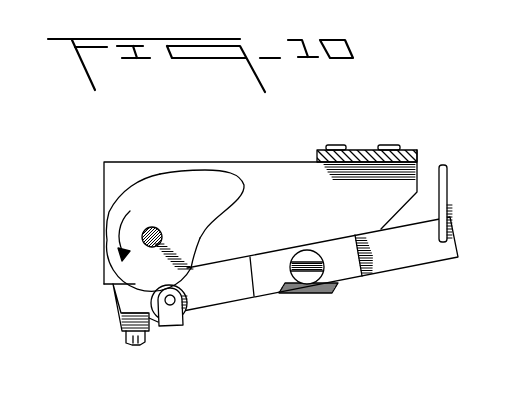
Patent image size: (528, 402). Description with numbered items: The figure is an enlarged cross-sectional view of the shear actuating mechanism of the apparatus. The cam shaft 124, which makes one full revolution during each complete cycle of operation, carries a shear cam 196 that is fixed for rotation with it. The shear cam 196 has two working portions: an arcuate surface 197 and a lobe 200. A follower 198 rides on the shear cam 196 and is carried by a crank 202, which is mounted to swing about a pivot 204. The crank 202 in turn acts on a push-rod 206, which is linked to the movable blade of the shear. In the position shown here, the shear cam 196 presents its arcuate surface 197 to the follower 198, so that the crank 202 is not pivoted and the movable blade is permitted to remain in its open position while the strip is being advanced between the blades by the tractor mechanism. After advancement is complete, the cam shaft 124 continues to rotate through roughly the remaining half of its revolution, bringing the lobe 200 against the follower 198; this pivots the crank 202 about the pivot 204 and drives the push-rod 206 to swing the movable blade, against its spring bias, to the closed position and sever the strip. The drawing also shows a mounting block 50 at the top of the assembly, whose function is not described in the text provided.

The mounting block 50 is at (370, 150).
The cam shaft 124 is at (157, 228).
The shear cam 196 is at (192, 236).
The arcuate surface 197 is at (133, 285).
The follower 198 is at (190, 298).
The lobe 200 is at (236, 190).
The crank 202 is at (393, 262).
The pivot 204 is at (309, 251).
The push-rod 206 is at (448, 185).